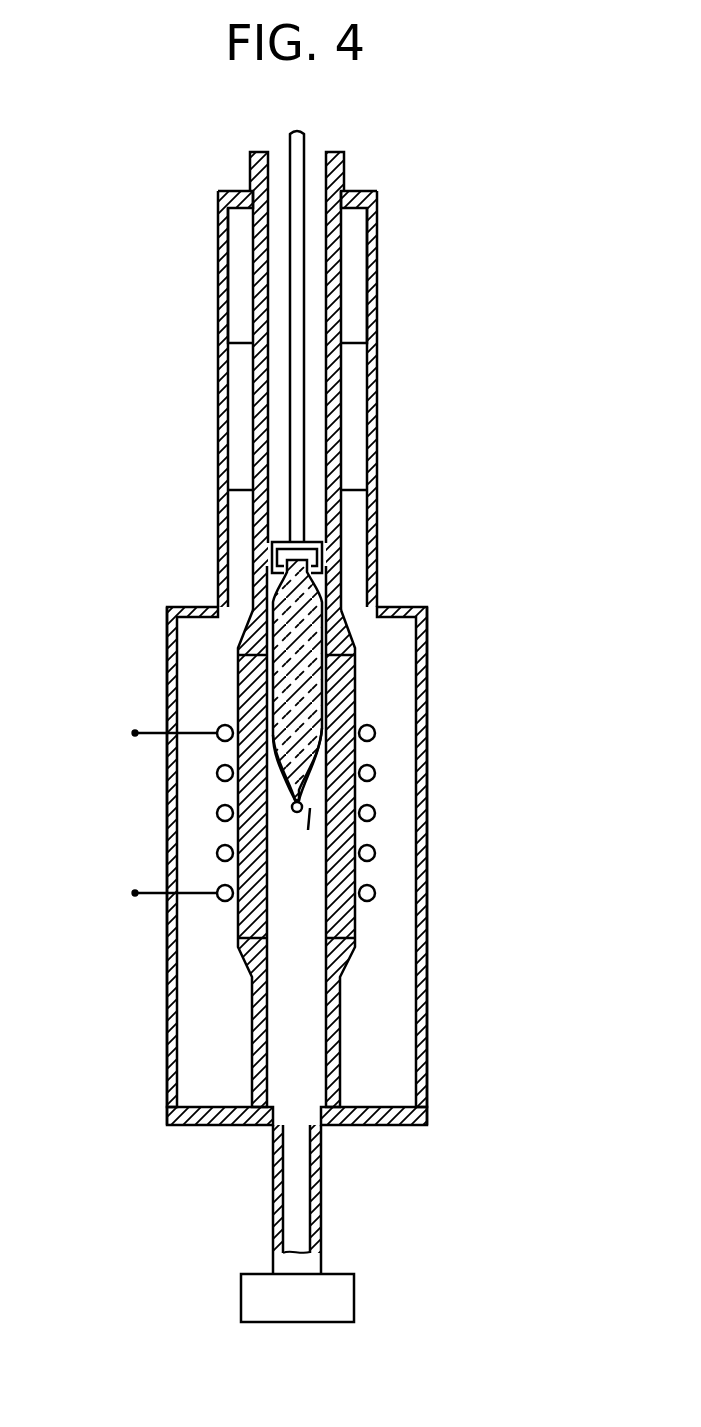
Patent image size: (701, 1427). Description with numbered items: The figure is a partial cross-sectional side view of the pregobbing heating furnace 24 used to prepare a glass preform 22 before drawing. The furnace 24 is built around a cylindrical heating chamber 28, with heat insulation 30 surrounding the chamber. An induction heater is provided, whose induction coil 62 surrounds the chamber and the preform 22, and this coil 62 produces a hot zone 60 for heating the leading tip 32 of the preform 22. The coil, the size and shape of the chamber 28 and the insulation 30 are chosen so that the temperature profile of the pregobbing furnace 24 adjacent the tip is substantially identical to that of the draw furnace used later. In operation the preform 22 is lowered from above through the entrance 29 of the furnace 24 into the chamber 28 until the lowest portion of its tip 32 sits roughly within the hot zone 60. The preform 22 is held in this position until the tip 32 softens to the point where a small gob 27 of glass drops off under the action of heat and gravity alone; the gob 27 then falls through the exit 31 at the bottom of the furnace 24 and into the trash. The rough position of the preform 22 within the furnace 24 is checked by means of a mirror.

The preform 22 is at (321, 680).
The pregobbing heating furnace 24 is at (146, 812).
The gob 27 is at (292, 798).
The heating chamber 28 is at (283, 905).
The entrance 29 is at (283, 156).
The heat insulation 30 is at (197, 1014).
The exit 31 is at (296, 1127).
The leading tip 32 is at (290, 776).
The hot zone 60 is at (310, 808).
The induction coil 62 is at (375, 815).